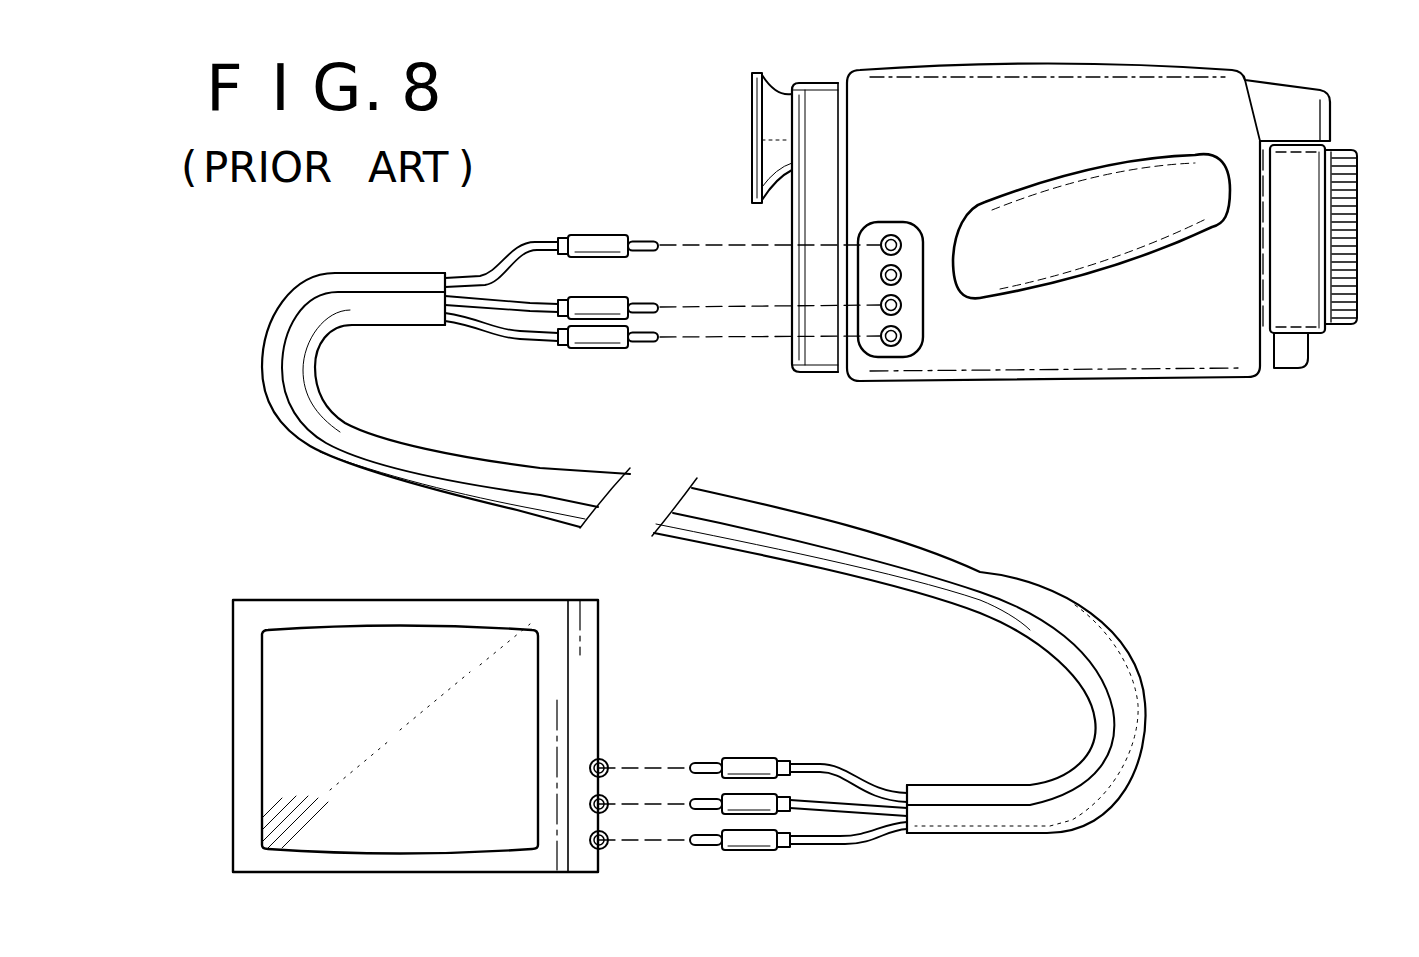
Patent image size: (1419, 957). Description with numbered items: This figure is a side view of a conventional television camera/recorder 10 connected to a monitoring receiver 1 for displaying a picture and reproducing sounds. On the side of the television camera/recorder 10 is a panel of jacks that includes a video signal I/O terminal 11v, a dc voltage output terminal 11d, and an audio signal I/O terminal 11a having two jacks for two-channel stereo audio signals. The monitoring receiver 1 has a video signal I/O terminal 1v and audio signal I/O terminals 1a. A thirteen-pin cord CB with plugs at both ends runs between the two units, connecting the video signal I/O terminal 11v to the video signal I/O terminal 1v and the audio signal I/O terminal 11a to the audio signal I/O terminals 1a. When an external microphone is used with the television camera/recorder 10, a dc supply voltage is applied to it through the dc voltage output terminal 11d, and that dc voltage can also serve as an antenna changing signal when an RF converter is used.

The television camera/recorder 10 is at (1272, 71).
The video signal I/O terminal 11v is at (891, 236).
The dc voltage output terminal 11d is at (881, 278).
The audio signal I/O terminal 11a is at (903, 305).
The 13-pin cord CB is at (1115, 628).
The monitoring receiver 1 is at (295, 533).
The video signal I/O terminal 1v is at (608, 761).
The audio signal I/O terminals 1a is at (609, 838).